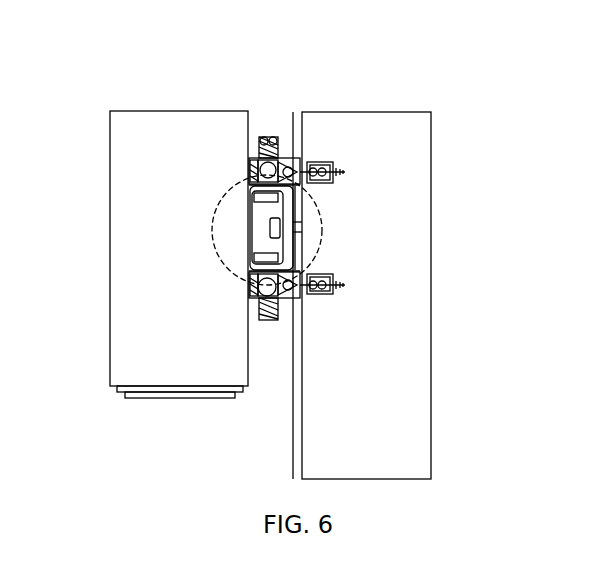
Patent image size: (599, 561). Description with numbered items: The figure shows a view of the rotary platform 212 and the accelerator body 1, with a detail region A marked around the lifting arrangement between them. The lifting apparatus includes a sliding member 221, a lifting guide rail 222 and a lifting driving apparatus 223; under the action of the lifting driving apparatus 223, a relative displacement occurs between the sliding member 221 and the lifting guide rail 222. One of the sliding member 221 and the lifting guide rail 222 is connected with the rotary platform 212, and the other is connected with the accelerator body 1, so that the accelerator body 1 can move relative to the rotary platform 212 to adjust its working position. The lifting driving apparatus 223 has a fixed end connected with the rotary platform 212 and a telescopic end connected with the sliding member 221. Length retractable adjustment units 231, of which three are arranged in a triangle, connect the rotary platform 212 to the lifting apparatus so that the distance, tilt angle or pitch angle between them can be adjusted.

The accelerator body 1 is at (190, 278).
The rotary platform 212 is at (327, 403).
The sliding member 221 is at (258, 222).
The lifting guide rail 222 is at (333, 164).
The lifting driving apparatus 223 is at (248, 275).
The adjustment unit 231 is at (343, 173).
The detail region A is at (322, 223).